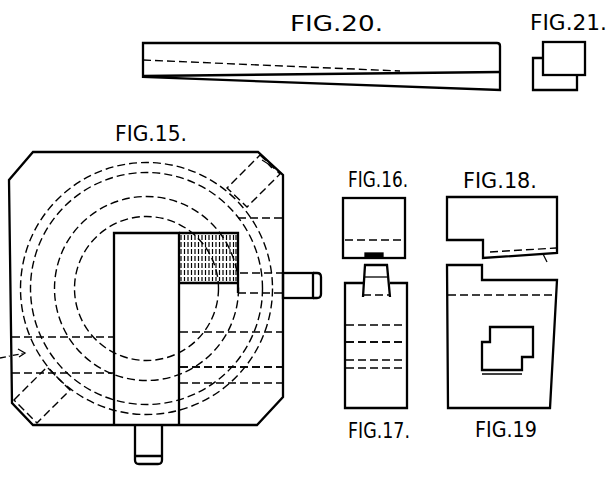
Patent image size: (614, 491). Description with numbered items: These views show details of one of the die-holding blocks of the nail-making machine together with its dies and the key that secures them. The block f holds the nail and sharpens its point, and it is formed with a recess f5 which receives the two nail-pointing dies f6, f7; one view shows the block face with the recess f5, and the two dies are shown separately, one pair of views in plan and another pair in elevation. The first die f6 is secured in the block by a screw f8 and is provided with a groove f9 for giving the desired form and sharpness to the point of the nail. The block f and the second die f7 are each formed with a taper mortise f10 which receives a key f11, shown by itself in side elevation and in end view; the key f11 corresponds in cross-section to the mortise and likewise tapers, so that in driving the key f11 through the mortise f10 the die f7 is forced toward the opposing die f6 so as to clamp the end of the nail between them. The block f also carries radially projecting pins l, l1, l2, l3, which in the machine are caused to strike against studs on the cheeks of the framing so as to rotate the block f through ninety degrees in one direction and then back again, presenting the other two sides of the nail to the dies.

In FIG. 15, the block f is at (141, 288).
In FIG. 15, the recess f5 is at (146, 329).
In FIG. 16, the nail-pointing die f6 is at (374, 228).
In FIG. 18, the nail-pointing die f6 is at (502, 227).
In FIG. 17, the nail-pointing die f7 is at (376, 336).
In FIG. 19, the nail-pointing die f7 is at (502, 336).
In FIG. 15, the screw f8 is at (210, 282).
In FIG. 16, the groove f9 is at (364, 258).
In FIG. 18, the groove f9 is at (548, 271).
In FIG. 15, the taper mortise f10 is at (260, 358).
In FIG. 17, the taper mortise f10 is at (397, 352).
In FIG. 19, the taper mortise f10 is at (507, 350).
In FIG. 20, the key f11 is at (321, 66).
In FIG. 21, the key f11 is at (559, 66).
In FIG. 15, the radially projecting pin l is at (290, 283).
In FIG. 15, the radially projecting pin l1 is at (258, 179).
In FIG. 15, the radially projecting pin l2 is at (28, 406).
In FIG. 15, the radially projecting pin l3 is at (143, 448).